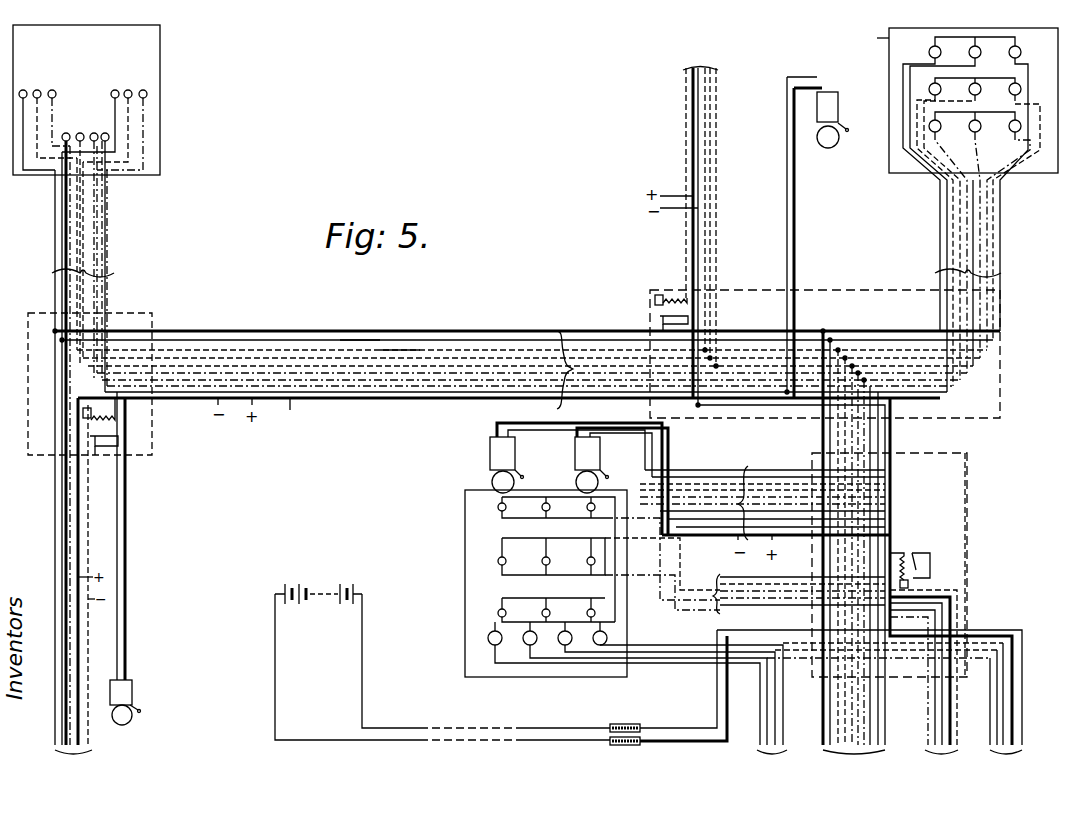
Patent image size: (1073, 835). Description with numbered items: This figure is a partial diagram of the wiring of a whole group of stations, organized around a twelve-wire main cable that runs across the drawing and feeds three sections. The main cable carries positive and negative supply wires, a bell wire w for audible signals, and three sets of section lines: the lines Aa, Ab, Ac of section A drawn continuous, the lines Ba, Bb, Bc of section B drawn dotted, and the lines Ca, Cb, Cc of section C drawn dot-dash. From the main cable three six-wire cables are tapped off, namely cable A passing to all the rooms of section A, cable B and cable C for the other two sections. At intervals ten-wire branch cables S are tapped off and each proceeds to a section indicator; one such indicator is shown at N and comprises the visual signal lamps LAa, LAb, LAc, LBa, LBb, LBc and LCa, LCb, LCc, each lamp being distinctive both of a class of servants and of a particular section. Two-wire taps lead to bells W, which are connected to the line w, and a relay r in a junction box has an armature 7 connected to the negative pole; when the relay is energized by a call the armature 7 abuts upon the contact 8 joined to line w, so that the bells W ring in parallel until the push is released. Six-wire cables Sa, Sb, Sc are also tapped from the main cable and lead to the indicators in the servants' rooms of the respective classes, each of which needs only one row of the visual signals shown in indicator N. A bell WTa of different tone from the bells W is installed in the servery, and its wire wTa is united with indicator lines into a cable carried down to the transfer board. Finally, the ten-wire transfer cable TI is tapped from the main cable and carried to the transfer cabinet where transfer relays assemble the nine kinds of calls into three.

The section indicator N is at (160, 150).
The branch ten-wire cable S is at (526, 260).
The six-wire cable of section A is at (81, 458).
The six-wire cable of section B is at (700, 221).
The six-wire cable of section C is at (941, 762).
The ten-wire transfer cable TI is at (889, 614).
The six-wire cable to servants' room indicator of class a Sa is at (677, 605).
The six-wire cable to servants' room indicator of class b Sb is at (887, 401).
The six-wire cable to servants' room indicator of class c Sc is at (787, 594).
The bell W is at (830, 162).
The servery bell WTa is at (575, 470).
The servery bell wire wTa is at (683, 684).
The bell line w is at (702, 535).
The relay wire y is at (975, 615).
The relay r is at (905, 540).
The armature of relay r 7 is at (940, 548).
The contact 8 is at (945, 560).
The line Aa is at (53, 526).
The line Ab is at (62, 540).
The line Ac is at (70, 560).
The line Ba is at (728, 162).
The line Bb is at (733, 188).
The line Bc is at (733, 216).
The line Ca is at (372, 375).
The line Cb is at (398, 380).
The line Cc is at (425, 386).
The visual indicator lamp LAa is at (931, 46).
The visual indicator lamp LAb is at (929, 83).
The visual indicator lamp LAc is at (930, 131).
The visual indicator lamp LBa is at (989, 50).
The visual indicator lamp LBb is at (989, 93).
The visual indicator lamp LBc is at (989, 122).
The visual indicator lamp LCa is at (1021, 52).
The visual indicator lamp LCb is at (1032, 89).
The visual indicator lamp LCc is at (1018, 132).